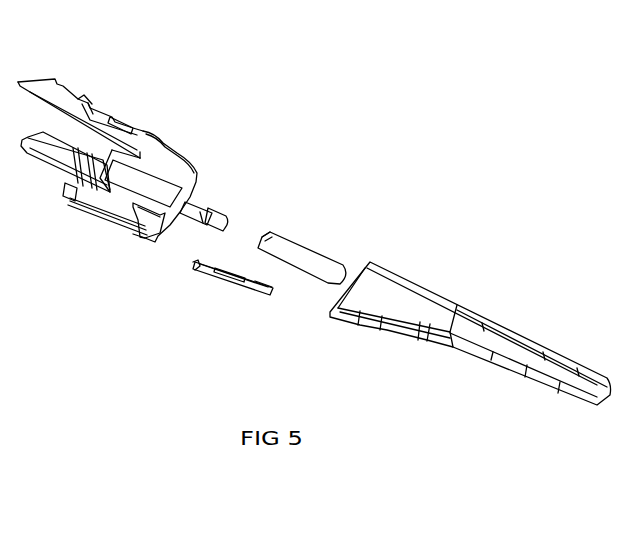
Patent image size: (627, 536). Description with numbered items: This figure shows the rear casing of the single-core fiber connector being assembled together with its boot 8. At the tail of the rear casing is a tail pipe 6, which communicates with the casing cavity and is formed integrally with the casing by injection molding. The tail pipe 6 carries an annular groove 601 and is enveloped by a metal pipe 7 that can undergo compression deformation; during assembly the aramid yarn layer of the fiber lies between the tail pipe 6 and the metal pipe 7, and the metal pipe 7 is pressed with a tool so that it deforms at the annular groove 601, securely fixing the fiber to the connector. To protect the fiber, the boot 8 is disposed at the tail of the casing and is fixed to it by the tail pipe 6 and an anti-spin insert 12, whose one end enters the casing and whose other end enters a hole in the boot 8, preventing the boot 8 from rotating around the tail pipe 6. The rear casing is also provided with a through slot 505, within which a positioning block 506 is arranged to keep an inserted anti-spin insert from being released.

The through slot 505 is at (157, 241).
The positioning block 506 is at (137, 213).
The tail pipe 6 is at (228, 220).
The annular groove 601 is at (210, 212).
The metal pipe 7 is at (310, 252).
The anti-spin insert 12 is at (230, 283).
The boot 8 is at (480, 330).